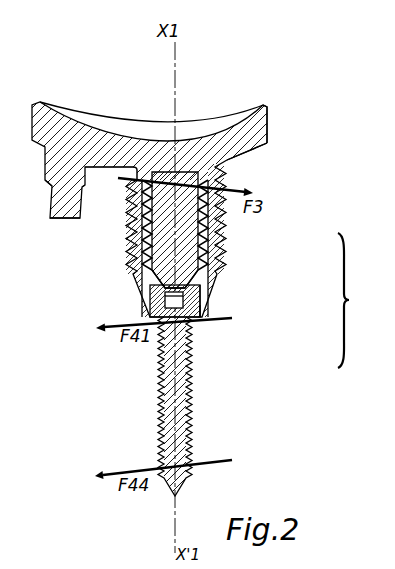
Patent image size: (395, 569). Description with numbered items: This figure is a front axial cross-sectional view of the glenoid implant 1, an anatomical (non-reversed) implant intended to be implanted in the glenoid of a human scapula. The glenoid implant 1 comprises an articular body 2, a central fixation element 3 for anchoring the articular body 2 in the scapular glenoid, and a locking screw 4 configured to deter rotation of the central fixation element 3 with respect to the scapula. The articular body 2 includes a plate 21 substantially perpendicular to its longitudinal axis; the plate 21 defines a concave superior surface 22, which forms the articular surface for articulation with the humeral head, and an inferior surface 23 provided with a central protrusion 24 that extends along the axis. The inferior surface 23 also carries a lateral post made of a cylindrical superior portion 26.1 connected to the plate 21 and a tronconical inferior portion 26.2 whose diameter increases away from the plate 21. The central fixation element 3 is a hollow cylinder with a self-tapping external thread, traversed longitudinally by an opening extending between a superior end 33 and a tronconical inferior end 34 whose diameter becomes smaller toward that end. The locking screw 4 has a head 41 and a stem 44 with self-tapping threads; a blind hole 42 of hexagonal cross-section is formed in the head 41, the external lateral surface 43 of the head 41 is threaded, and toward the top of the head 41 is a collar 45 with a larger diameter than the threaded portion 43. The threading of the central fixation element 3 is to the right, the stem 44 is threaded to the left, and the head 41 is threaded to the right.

The glenoid implant 1 is at (348, 300).
The articular body 2 is at (171, 190).
The central fixation element 3 is at (207, 241).
The locking screw 4 is at (208, 386).
The plate 21 is at (265, 108).
The superior surface 22 is at (192, 122).
The inferior surface 23 is at (259, 150).
The central protrusion 24 is at (150, 237).
The superior portion of lateral post 26.1 is at (62, 180).
The inferior portion of lateral post 26.2 is at (50, 218).
The superior end 33 is at (135, 182).
The inferior end 34 is at (194, 318).
The head 41 is at (148, 303).
The blind hole 42 is at (218, 290).
The external lateral surface of head 43 is at (206, 307).
The stem 44 is at (186, 427).
The collar 45 is at (158, 290).